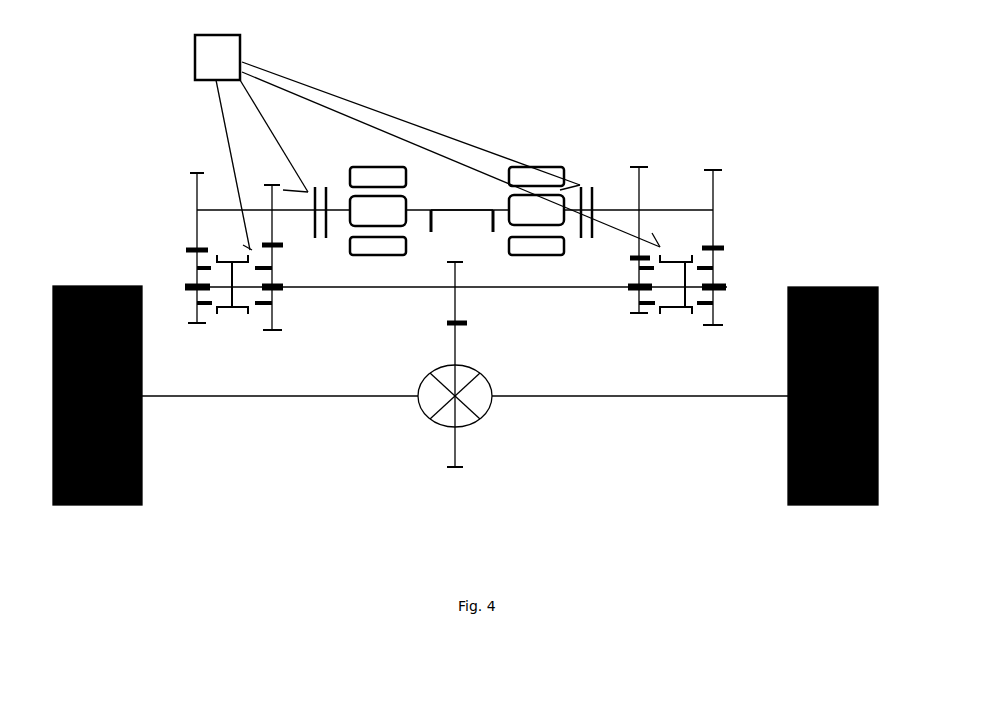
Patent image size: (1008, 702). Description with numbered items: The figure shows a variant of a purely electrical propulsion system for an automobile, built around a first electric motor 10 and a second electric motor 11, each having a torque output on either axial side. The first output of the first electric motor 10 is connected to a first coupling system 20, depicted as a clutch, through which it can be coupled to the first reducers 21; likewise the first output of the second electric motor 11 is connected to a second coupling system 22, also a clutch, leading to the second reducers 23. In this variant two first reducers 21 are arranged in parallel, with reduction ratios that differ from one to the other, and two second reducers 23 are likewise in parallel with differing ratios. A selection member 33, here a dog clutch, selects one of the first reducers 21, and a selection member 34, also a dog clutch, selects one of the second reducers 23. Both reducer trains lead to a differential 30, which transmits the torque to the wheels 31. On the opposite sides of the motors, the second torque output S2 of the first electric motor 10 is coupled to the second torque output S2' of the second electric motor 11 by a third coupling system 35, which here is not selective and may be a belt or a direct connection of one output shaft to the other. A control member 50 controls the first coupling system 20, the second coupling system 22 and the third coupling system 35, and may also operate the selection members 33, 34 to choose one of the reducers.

The control member 50 is at (227, 50).
The first electric motor 10 is at (392, 172).
The second electric motor 11 is at (548, 179).
The first coupling system 20 is at (317, 200).
The second coupling system 22 is at (592, 195).
The first reducer 21 is at (277, 247).
The second reducer 23 is at (640, 203).
The selection member 33 is at (243, 310).
The selection member 34 is at (677, 312).
The third coupling system 35 is at (461, 207).
The second torque output S2 is at (430, 234).
The second torque output S2' is at (489, 234).
The differential 30 is at (482, 405).
The wheels 31 is at (142, 453).